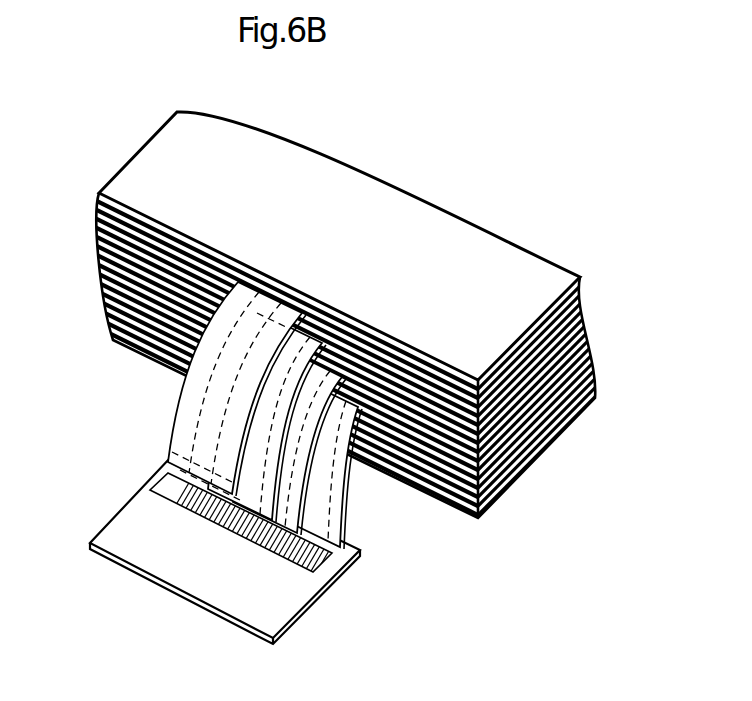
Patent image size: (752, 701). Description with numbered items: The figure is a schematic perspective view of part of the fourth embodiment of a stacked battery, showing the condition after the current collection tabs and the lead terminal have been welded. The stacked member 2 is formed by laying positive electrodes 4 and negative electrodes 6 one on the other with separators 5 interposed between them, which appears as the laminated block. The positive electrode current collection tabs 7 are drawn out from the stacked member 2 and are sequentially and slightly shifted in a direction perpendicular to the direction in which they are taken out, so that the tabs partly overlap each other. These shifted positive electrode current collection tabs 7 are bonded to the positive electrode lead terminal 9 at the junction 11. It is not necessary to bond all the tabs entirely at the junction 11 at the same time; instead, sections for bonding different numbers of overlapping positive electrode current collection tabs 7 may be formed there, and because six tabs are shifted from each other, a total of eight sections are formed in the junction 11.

The stacked member 2 is at (421, 195).
The positive electrode 4 is at (497, 492).
The separator 5 is at (445, 497).
The negative electrode 6 is at (433, 363).
The positive electrode current collection tab 7 is at (384, 484).
The positive electrode lead terminal 9 is at (170, 568).
The junction 11 is at (155, 470).